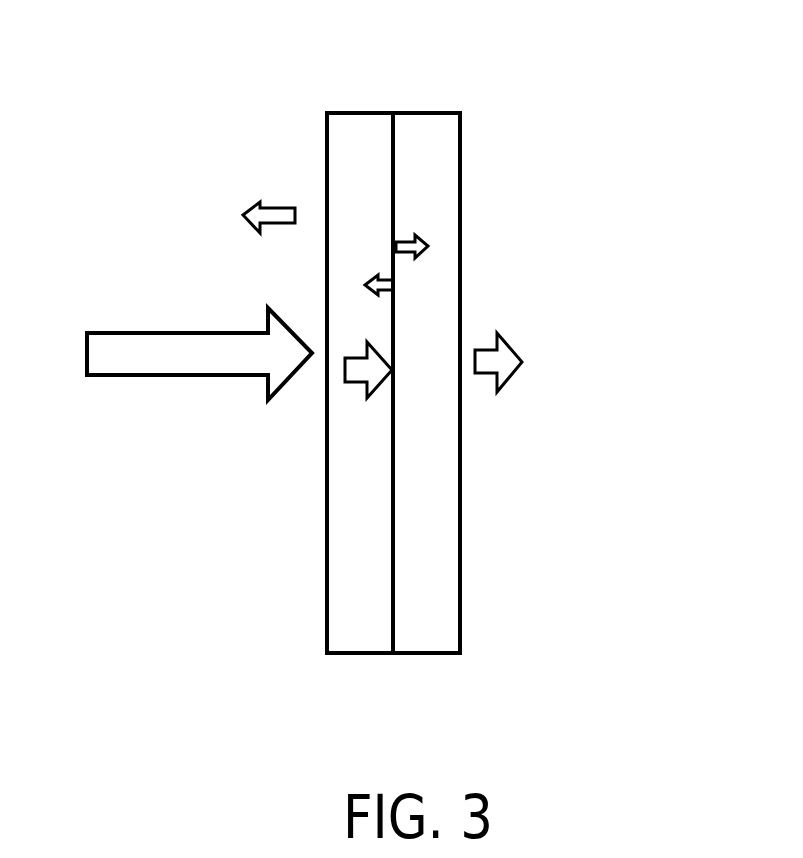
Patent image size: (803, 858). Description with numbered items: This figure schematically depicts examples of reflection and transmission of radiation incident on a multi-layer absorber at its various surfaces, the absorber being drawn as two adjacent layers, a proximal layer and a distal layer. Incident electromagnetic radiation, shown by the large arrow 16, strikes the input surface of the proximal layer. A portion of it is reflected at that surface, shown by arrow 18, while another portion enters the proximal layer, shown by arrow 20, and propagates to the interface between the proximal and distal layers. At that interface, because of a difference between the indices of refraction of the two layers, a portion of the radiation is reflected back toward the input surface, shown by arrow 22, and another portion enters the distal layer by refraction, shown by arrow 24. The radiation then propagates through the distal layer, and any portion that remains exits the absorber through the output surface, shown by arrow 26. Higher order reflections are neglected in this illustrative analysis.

The incident electromagnetic radiation arrow 16 is at (150, 378).
The reflected radiation arrow 18 is at (258, 207).
The radiation entering proximal layer arrow 20 is at (345, 385).
The interface-reflected radiation arrow 22 is at (380, 275).
The radiation entering distal layer arrow 24 is at (418, 245).
The exiting radiation arrow 26 is at (510, 378).